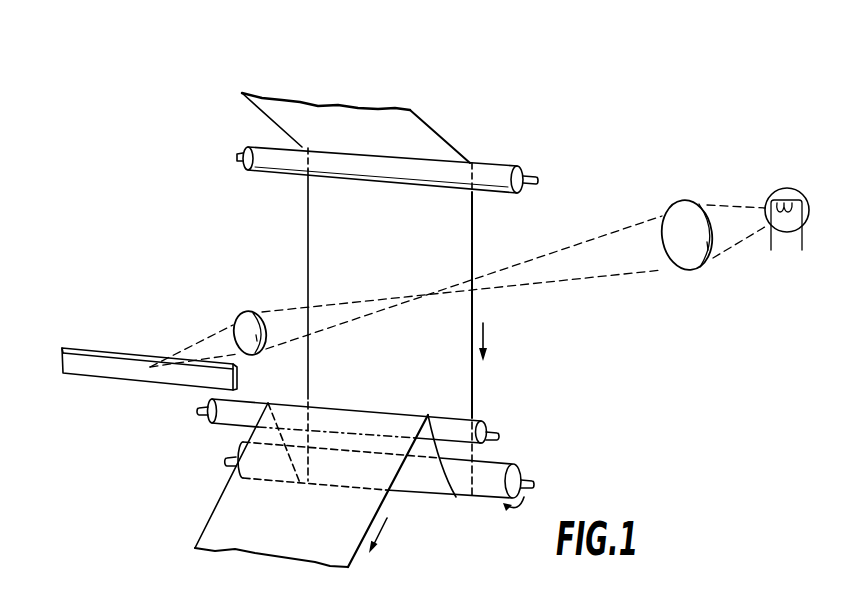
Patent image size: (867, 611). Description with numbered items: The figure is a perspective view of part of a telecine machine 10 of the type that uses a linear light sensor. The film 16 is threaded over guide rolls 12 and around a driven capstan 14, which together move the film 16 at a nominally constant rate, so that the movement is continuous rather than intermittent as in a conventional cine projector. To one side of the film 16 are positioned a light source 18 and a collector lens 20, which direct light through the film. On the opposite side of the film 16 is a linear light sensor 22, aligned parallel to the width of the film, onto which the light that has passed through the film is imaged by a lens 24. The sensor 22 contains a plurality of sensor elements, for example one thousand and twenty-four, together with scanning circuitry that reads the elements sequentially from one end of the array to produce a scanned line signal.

The telecine machine 10 is at (200, 250).
The guide rolls 12 is at (506, 163).
The driven capstan 14 is at (483, 494).
The film 16 is at (469, 372).
The light source 18 is at (768, 197).
The collector lens 20 is at (690, 200).
The linear light sensor 22 is at (103, 373).
The lens 24 is at (238, 315).